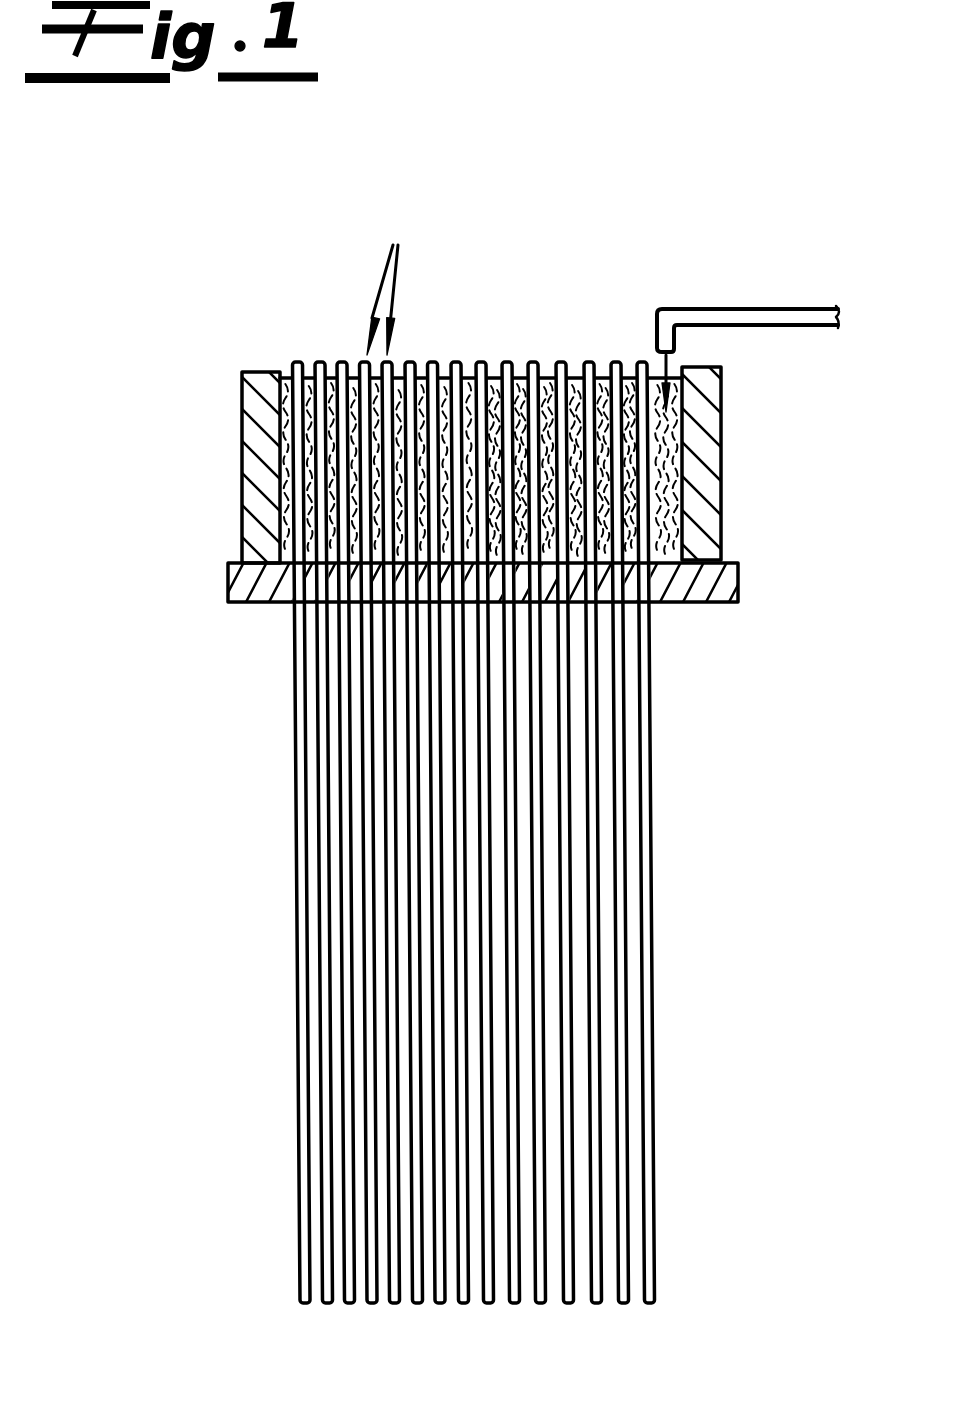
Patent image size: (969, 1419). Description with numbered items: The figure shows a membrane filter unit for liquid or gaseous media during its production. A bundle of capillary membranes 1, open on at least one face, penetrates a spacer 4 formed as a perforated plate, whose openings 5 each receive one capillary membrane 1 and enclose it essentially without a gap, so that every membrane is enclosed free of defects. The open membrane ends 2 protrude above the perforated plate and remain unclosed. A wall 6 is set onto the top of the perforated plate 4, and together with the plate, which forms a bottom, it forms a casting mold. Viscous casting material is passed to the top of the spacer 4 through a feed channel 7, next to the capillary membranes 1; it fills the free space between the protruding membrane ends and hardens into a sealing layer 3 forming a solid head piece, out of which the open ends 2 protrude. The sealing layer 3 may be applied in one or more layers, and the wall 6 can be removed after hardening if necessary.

The capillary membranes 1 is at (350, 1232).
The open membrane end 2 is at (397, 263).
The sealing layer 3 is at (422, 437).
The spacer 4 is at (238, 587).
The openings 5 is at (305, 593).
The wall 6 is at (242, 477).
The feed channel 7 is at (747, 312).